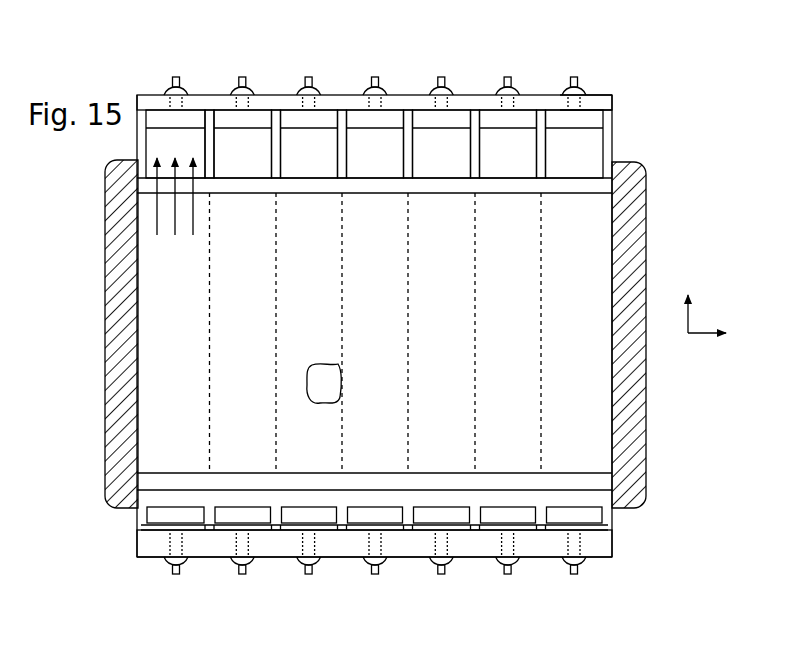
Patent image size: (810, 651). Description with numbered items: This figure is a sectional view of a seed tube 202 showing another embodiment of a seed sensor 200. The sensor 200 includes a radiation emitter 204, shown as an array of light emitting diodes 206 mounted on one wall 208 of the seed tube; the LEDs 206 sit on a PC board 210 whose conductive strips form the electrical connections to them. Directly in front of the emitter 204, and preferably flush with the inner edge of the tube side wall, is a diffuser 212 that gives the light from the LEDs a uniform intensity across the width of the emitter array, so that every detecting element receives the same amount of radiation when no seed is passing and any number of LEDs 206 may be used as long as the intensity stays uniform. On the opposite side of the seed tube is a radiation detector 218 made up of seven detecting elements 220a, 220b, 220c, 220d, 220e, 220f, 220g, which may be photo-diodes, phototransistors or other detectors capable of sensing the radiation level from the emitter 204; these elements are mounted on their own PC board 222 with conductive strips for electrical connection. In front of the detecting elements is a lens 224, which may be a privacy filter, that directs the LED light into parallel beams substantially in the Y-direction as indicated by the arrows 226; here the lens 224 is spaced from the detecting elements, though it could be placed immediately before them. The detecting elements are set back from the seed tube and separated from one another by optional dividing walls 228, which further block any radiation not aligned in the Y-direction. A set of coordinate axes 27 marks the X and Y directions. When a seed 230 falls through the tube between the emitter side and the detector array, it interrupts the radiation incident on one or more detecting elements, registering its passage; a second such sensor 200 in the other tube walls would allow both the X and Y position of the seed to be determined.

The sensor 200 is at (169, 587).
The seed tube 202 is at (660, 480).
The radiation emitter 204 is at (406, 562).
The light emitting diodes 206 is at (223, 518).
The wall of the seed tube 208 is at (123, 510).
The PC board 210 is at (270, 548).
The diffuser 212 is at (168, 478).
The radiation detector 218 is at (133, 92).
The detecting element 220a is at (194, 118).
The detecting element 220b is at (261, 120).
The detecting element 220c is at (328, 120).
The detecting element 220d is at (395, 120).
The detecting element 220e is at (456, 120).
The detecting element 220f is at (525, 120).
The detecting element 220g is at (598, 118).
The PC board 222 is at (613, 102).
The lens 224 is at (507, 186).
The arrows 226 is at (193, 205).
The dividing walls 228 is at (529, 152).
The seed 230 is at (313, 383).
The coordinate axes 27 is at (700, 336).